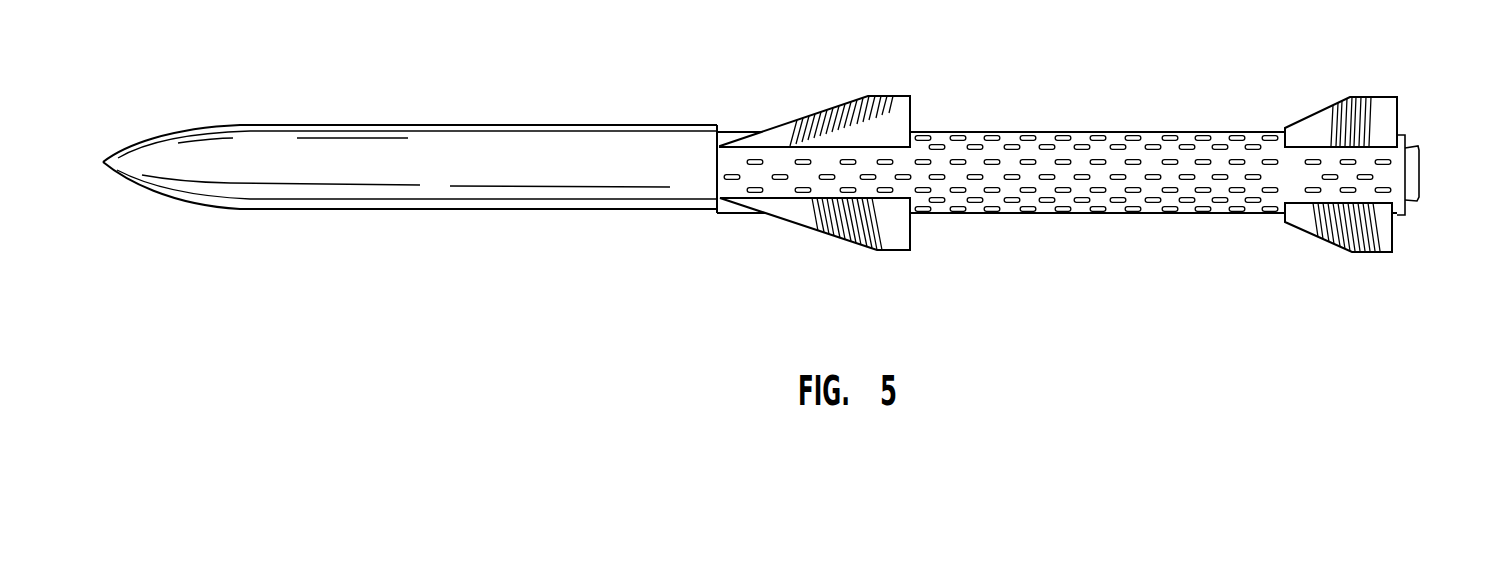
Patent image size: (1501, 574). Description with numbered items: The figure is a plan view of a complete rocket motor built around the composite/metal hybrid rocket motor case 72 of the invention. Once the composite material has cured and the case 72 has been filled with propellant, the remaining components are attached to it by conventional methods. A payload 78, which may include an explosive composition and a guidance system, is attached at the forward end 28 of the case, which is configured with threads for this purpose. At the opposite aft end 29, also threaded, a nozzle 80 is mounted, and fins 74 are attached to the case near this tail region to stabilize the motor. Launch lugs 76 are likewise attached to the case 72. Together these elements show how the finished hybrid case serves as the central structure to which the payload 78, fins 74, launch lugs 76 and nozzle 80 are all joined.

The payload 78 is at (422, 173).
The forward end 28 is at (717, 163).
The launch lugs 76 is at (760, 131).
The fins 74 is at (845, 130).
The composite/metal hybrid rocket motor case 72 is at (1077, 215).
The aft end 29 is at (1330, 122).
The nozzle 80 is at (1415, 172).